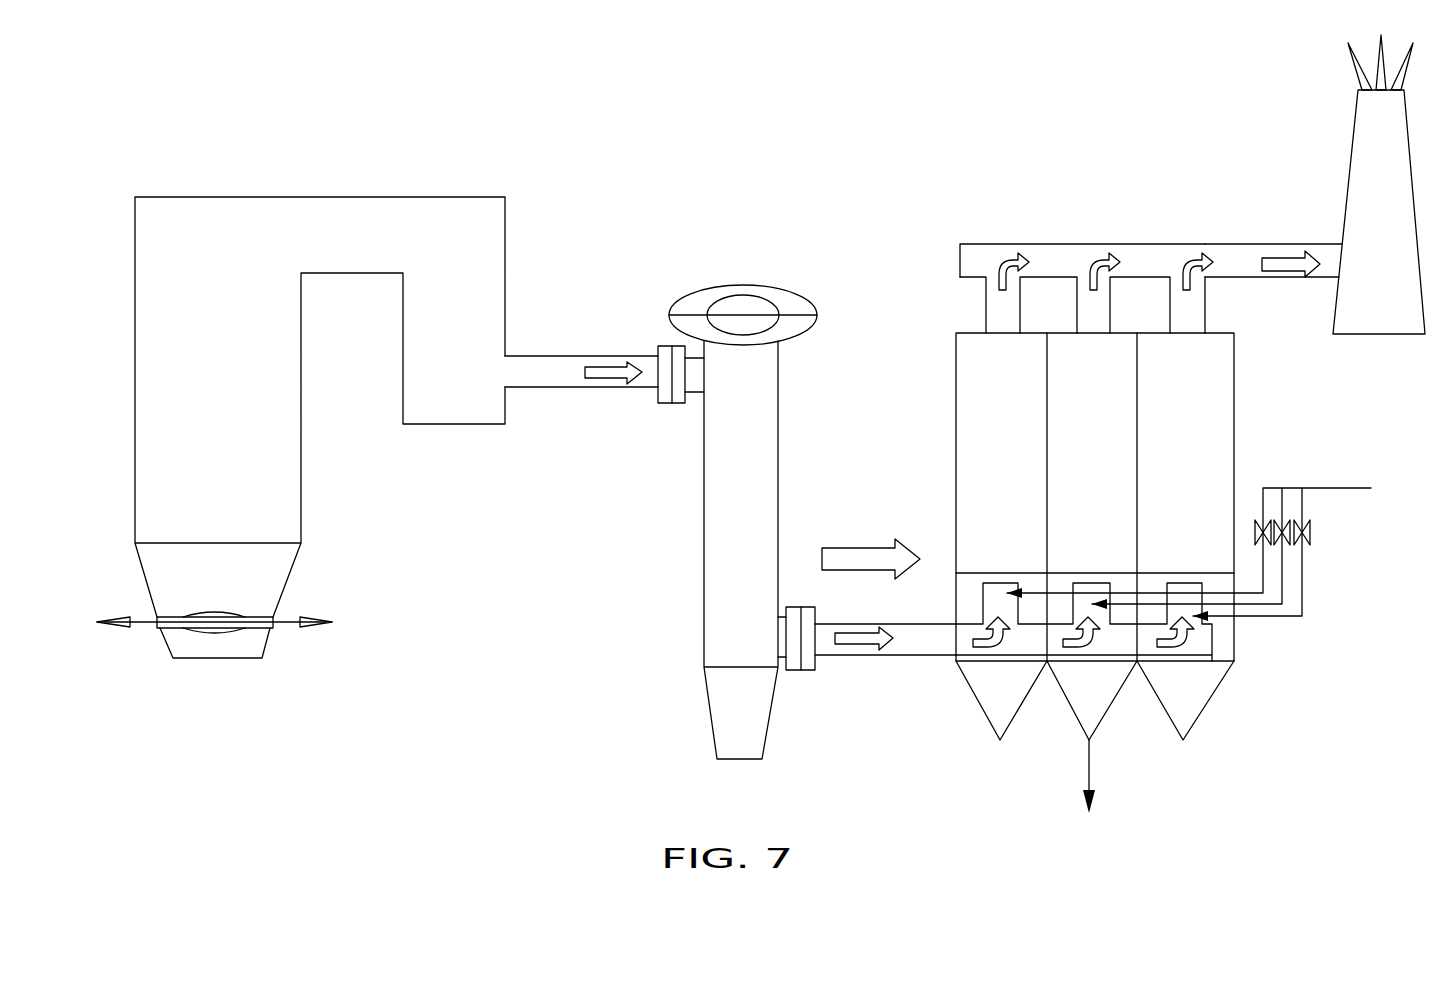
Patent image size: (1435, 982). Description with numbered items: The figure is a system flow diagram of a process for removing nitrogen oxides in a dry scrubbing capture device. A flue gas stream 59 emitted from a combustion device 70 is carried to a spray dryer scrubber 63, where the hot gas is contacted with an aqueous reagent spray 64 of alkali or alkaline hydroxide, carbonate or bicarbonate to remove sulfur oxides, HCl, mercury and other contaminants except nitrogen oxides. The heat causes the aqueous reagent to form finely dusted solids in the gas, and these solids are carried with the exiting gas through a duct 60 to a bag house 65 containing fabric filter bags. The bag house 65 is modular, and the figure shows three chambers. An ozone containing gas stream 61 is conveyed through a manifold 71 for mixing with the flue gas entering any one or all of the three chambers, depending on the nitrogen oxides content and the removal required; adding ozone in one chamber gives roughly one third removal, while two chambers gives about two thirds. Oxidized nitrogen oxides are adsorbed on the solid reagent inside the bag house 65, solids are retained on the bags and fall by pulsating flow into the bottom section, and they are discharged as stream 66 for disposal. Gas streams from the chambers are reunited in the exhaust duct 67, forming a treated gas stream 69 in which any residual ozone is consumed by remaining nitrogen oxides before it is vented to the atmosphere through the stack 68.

The flue gas stream 59 is at (553, 378).
The duct 60 is at (914, 643).
The ozone containing gas stream 61 is at (1337, 488).
The spray dryer scrubber 63 is at (727, 430).
The reagent spray 64 is at (747, 282).
The bag house 65 is at (988, 382).
The solids discharge stream 66 is at (1089, 774).
The exhaust duct 67 is at (1048, 244).
The stack 68 is at (1368, 133).
The treated gas stream 69 is at (1240, 258).
The combustion device 70 is at (257, 576).
The manifold 71 is at (1240, 620).